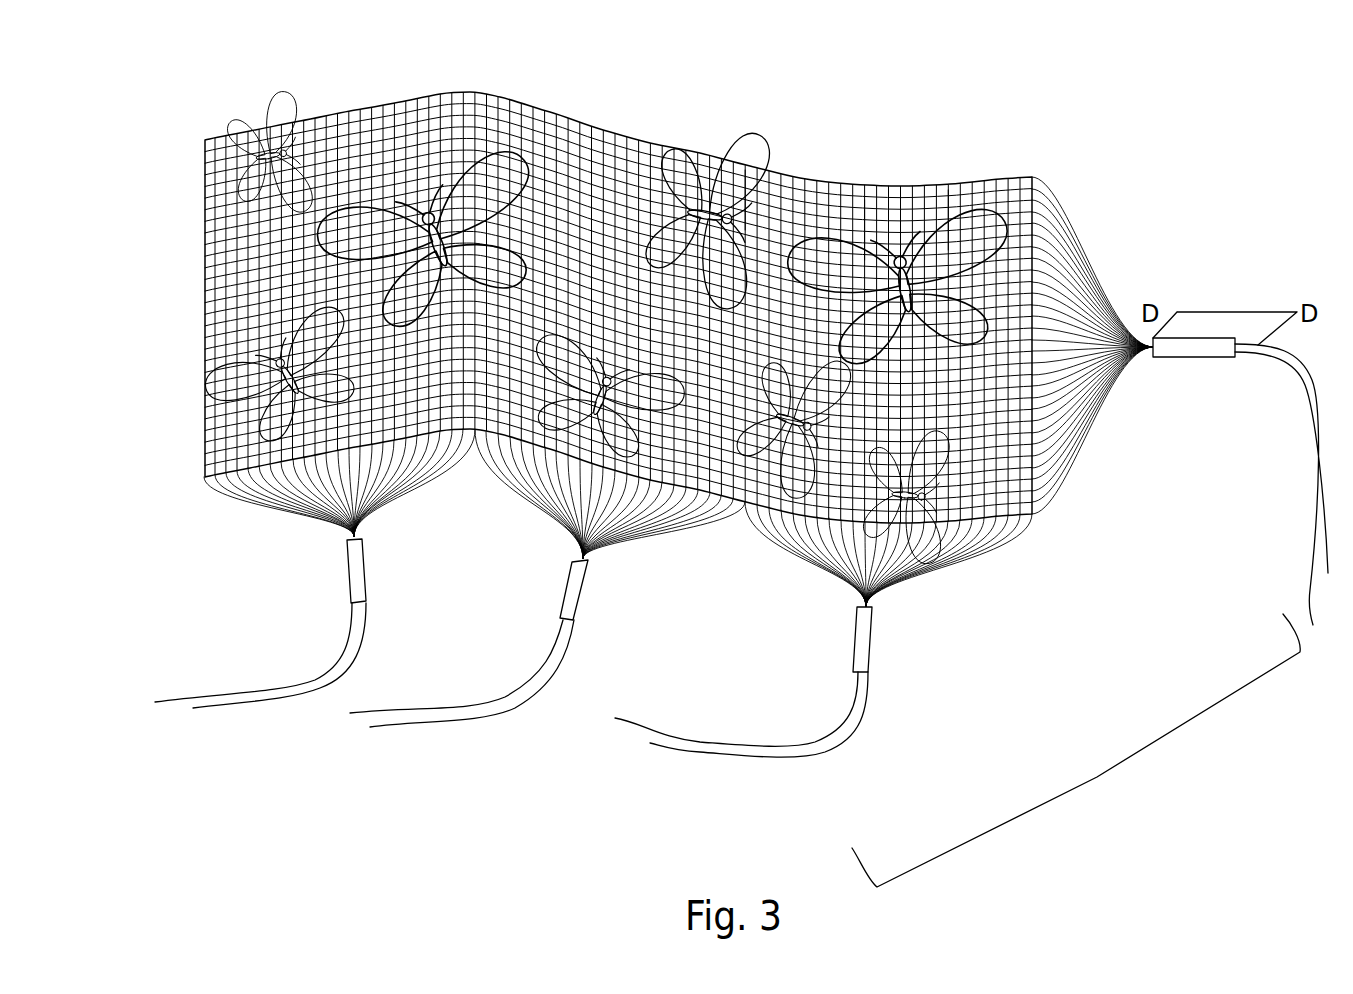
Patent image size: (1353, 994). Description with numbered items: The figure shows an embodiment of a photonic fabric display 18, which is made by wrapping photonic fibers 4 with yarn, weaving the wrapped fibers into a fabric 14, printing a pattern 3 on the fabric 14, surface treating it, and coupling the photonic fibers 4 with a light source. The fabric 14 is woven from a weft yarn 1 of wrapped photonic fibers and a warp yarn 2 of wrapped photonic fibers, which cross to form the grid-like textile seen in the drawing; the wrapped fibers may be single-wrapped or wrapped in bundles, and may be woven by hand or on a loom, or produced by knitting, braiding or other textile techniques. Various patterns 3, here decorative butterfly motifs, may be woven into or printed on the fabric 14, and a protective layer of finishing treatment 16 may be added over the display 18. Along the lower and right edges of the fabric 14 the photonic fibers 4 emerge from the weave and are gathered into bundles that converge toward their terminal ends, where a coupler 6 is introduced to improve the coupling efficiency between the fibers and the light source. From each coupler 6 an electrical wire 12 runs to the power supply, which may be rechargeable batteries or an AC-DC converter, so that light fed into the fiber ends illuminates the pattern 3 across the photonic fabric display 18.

The weft yarn 1 is at (947, 193).
The warp yarn 2 is at (867, 203).
The pattern 3 is at (748, 172).
The photonic fibers 4 is at (1078, 452).
The coupler 6 is at (872, 635).
The electrical wire 12 is at (780, 752).
The fabric 14 is at (210, 278).
The finishing treatment 16 is at (388, 112).
The photonic fabric display 18 is at (1097, 777).